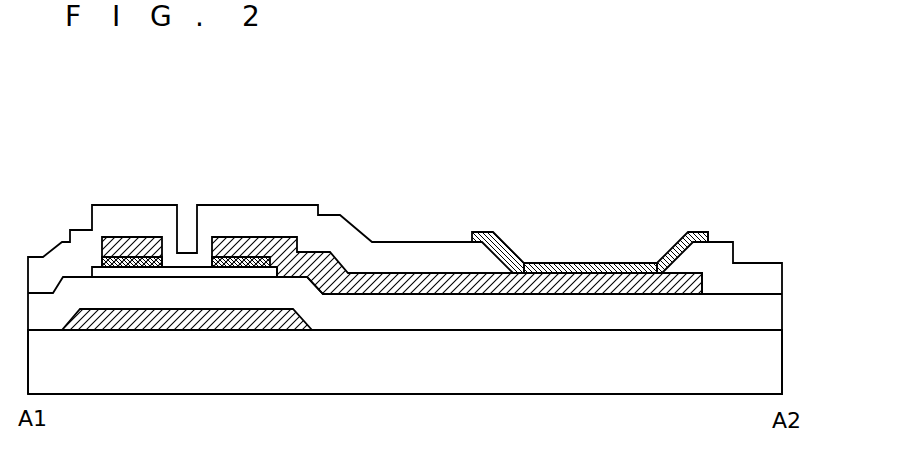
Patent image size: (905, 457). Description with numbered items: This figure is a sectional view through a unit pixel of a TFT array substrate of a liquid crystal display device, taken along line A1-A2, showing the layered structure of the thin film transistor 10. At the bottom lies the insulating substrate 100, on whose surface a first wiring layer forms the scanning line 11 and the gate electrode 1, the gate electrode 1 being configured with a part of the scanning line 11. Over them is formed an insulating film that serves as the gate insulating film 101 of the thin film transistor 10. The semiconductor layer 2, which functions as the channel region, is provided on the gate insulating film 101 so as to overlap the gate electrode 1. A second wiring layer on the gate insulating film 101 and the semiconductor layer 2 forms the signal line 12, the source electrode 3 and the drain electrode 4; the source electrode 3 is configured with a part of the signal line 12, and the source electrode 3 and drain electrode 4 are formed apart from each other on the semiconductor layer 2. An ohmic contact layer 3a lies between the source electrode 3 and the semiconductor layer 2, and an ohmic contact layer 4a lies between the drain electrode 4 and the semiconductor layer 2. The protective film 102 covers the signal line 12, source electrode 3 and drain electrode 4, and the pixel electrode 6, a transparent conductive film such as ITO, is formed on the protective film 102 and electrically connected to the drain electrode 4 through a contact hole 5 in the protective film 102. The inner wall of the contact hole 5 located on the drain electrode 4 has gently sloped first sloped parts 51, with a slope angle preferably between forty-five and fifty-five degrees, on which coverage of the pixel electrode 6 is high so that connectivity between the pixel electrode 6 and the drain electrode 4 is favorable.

The thin film transistor 10 is at (313, 183).
The insulating substrate 100 is at (772, 371).
The gate insulating film 101 is at (772, 313).
The gate electrode 1 is at (187, 372).
The scanning line 11 is at (178, 332).
The semiconductor layer 2 is at (186, 268).
The source electrode 3 is at (130, 210).
The signal line 12 is at (122, 243).
The ohmic contact layer 3a is at (101, 261).
The drain electrode 4 is at (277, 243).
The ohmic contact layer 4a is at (232, 259).
The protective film 102 is at (405, 260).
The contact hole 5 is at (589, 262).
The first sloped part 51 is at (516, 242).
The pixel electrode 6 is at (690, 231).